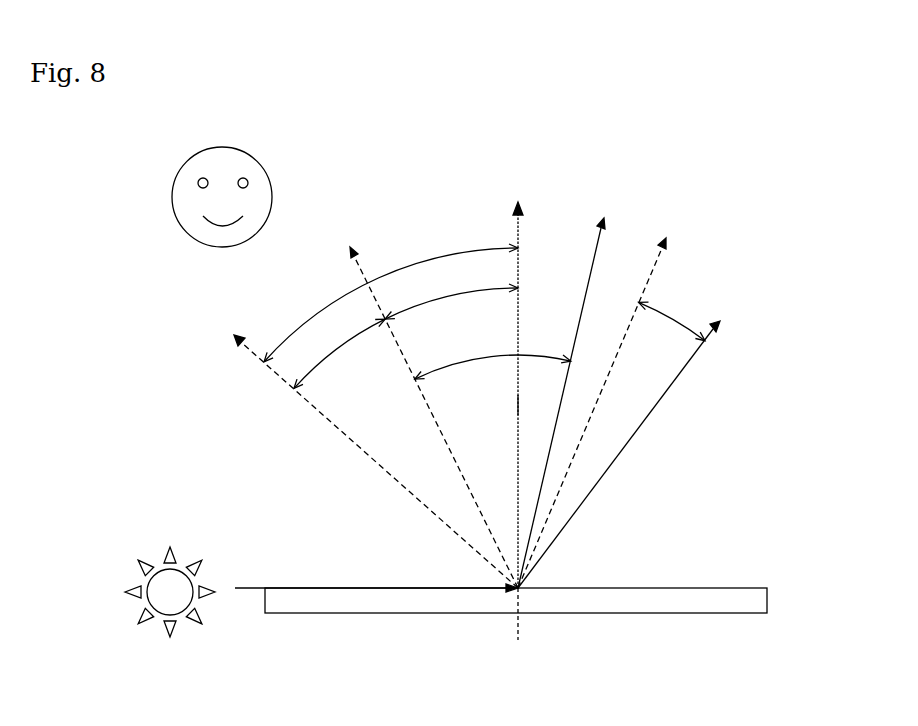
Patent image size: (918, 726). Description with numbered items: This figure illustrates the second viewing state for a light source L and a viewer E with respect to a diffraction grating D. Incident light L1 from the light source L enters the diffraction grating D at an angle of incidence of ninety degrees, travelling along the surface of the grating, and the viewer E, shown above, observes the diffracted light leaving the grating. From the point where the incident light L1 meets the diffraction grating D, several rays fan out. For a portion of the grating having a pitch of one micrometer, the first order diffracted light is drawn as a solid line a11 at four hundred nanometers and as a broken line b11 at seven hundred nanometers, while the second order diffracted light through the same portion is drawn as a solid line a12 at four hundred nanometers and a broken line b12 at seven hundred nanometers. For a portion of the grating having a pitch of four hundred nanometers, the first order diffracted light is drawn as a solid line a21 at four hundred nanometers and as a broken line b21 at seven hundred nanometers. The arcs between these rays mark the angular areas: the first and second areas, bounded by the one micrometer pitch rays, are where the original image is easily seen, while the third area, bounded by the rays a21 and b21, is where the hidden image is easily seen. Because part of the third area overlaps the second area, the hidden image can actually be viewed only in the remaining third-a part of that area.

The viewer E is at (247, 147).
The light source L is at (192, 537).
The incident light L1 is at (256, 590).
The diffraction grating D is at (667, 581).
The first order diffracted light at 400 nm (1 μm pitch) a11 is at (680, 373).
The second order diffracted light at 400 nm (1 μm pitch) a12 is at (582, 326).
The first order diffracted light at 400 nm (400 nm pitch) a21 is at (519, 404).
The first order diffracted light at 700 nm (1 μm pitch) b11 is at (636, 318).
The second order diffracted light at 700 nm (1 μm pitch) b12 is at (440, 430).
The first order diffracted light at 700 nm (400 nm pitch) b21 is at (350, 440).